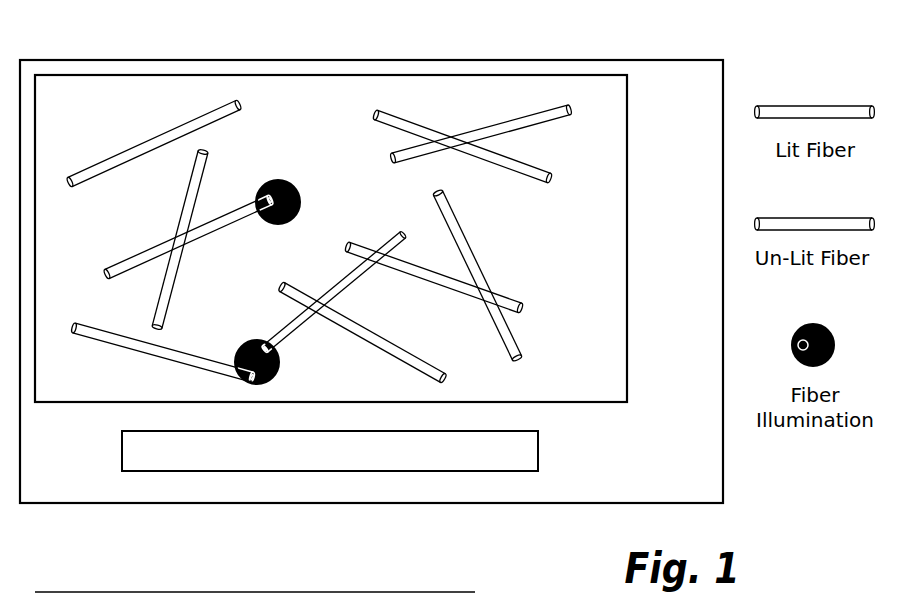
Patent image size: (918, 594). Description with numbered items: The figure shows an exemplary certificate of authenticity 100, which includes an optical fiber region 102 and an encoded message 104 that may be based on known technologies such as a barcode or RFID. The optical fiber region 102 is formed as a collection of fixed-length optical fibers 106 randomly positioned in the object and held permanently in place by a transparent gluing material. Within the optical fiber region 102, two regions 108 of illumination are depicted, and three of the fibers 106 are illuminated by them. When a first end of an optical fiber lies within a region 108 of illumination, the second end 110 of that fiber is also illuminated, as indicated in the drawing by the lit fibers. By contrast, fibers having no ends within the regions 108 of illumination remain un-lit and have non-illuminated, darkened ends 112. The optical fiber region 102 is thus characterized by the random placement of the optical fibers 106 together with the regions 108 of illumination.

The certificate of authenticity 100 is at (743, 78).
The optical fiber region 102 is at (627, 255).
The encoded message 104 is at (372, 450).
The optical fibers 106 is at (172, 135).
The regions of illumination 108 is at (289, 195).
The second end 110 is at (406, 232).
The non-illuminated ends 112 is at (570, 102).